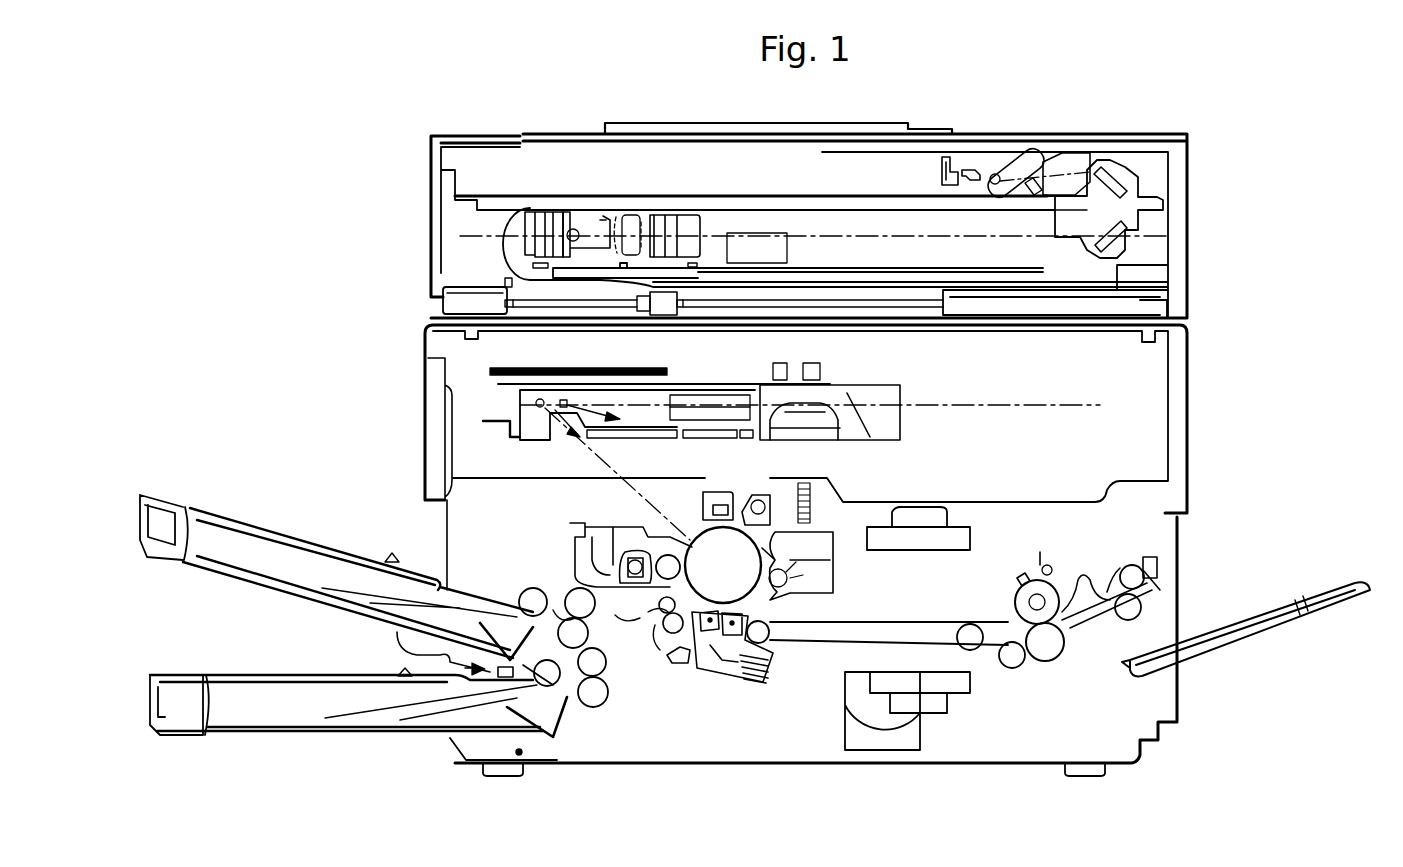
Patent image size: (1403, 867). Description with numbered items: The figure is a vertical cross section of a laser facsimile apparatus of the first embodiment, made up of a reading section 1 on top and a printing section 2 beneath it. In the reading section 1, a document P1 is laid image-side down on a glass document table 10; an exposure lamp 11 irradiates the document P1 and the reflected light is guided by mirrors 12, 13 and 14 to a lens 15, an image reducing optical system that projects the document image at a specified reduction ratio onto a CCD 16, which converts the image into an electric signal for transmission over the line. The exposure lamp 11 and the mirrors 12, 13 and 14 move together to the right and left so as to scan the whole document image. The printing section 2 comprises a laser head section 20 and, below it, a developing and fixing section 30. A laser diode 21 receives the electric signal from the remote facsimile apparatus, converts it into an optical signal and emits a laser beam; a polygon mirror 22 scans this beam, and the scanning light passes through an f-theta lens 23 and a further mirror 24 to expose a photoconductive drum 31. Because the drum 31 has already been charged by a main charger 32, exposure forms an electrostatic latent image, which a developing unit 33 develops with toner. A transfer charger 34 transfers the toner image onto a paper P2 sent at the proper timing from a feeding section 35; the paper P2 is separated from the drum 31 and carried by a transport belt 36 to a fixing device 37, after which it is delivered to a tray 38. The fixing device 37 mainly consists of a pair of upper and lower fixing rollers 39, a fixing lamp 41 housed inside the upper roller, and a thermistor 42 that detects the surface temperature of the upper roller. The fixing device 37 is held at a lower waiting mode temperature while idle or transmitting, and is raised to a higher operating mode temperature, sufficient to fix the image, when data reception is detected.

The reading section 1 is at (390, 158).
The printing section 2 is at (408, 461).
The glass document table 10 is at (900, 130).
The exposure lamp 11 is at (1003, 167).
The mirror 12 is at (1066, 168).
The mirror 13 is at (1113, 160).
The mirror 14 is at (1127, 250).
The lens 15 is at (693, 223).
The CCD 16 is at (641, 222).
The laser head section 20 is at (962, 379).
The laser diode 21 is at (880, 385).
The polygon mirror 22 is at (848, 403).
The f-theta lens 23 is at (710, 410).
The mirror 24 is at (520, 398).
The developing and fixing section 30 is at (758, 712).
The photoconductive drum 31 is at (695, 540).
The main charger 32 is at (755, 492).
The developing unit 33 is at (622, 527).
The transfer charger 34 is at (703, 683).
The feeding section 35 is at (591, 722).
The transport belt 36 is at (818, 652).
The fixing device 37 is at (1075, 668).
The tray 38 is at (1233, 655).
The fixing rollers 39 is at (1063, 582).
The fixing lamp 41 is at (1015, 602).
The thermistor 42 is at (1023, 578).
The document P1 is at (785, 124).
The paper P2 is at (345, 588).